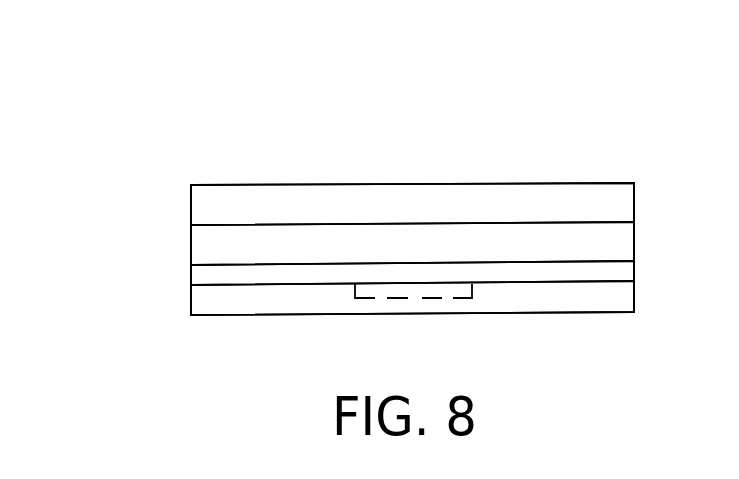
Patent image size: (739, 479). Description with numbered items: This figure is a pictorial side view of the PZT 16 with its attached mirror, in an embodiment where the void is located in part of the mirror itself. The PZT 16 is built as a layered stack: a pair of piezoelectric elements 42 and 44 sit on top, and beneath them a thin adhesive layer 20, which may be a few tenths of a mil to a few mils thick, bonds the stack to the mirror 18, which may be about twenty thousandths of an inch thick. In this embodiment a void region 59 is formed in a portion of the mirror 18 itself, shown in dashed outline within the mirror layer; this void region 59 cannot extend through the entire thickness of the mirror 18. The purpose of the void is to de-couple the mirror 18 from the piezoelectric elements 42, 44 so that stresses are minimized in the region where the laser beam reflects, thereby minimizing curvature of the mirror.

The PZT 16 is at (160, 121).
The piezoelectric element 42 is at (190, 210).
The piezoelectric element 44 is at (190, 247).
The adhesive layer 20 is at (190, 275).
The mirror 18 is at (190, 297).
The void region 59 is at (387, 282).